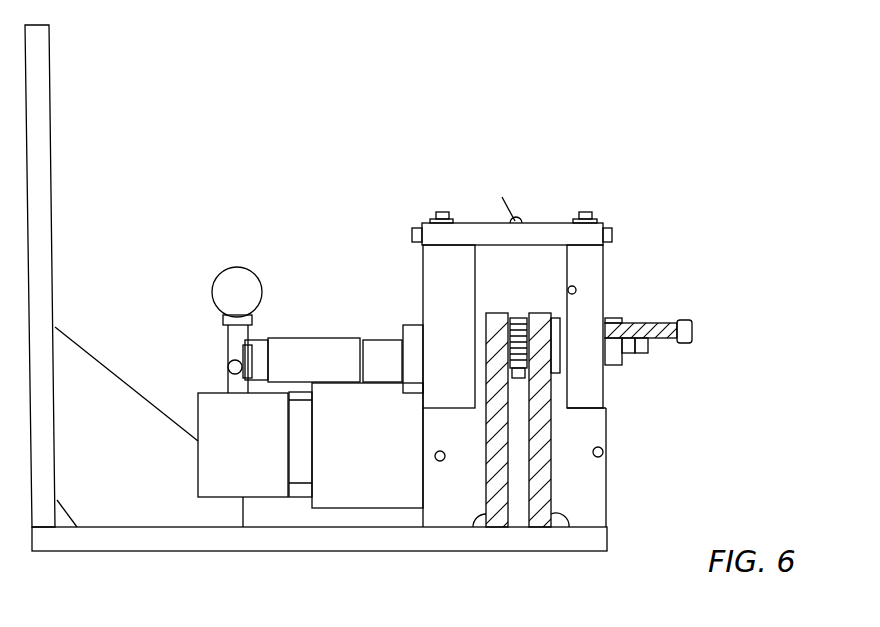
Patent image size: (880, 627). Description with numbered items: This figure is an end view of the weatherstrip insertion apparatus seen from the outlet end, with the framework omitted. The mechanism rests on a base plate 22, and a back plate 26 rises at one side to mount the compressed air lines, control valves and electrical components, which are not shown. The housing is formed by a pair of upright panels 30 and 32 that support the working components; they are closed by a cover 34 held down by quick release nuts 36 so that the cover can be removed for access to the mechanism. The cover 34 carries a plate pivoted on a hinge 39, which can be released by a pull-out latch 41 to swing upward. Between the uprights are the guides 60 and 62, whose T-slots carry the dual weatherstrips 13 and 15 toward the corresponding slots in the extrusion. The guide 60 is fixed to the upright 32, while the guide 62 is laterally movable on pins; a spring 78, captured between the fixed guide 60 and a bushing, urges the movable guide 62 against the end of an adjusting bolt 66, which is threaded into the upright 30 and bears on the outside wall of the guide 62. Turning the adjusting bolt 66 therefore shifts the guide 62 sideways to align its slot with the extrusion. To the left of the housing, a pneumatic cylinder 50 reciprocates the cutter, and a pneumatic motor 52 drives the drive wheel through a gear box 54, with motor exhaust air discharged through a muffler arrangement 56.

The weatherstrip 13 is at (506, 353).
The weatherstrip 15 is at (532, 370).
The base plate 22 is at (213, 549).
The back plate 26 is at (50, 105).
The upright panel 30 is at (598, 277).
The upright panel 32 is at (437, 270).
The cover 34 is at (483, 230).
The quick release nuts 36 is at (442, 212).
The hinge 39 is at (412, 233).
The pull-out latch 41 is at (522, 218).
The pneumatic cylinder 50 is at (313, 337).
The pneumatic motor 52 is at (213, 392).
The gear box 54 is at (352, 491).
The muffler arrangement 56 is at (218, 277).
The guide 60 is at (486, 312).
The guide 62 is at (551, 313).
The adjusting bolt 66 is at (685, 344).
The spring 78 is at (522, 317).